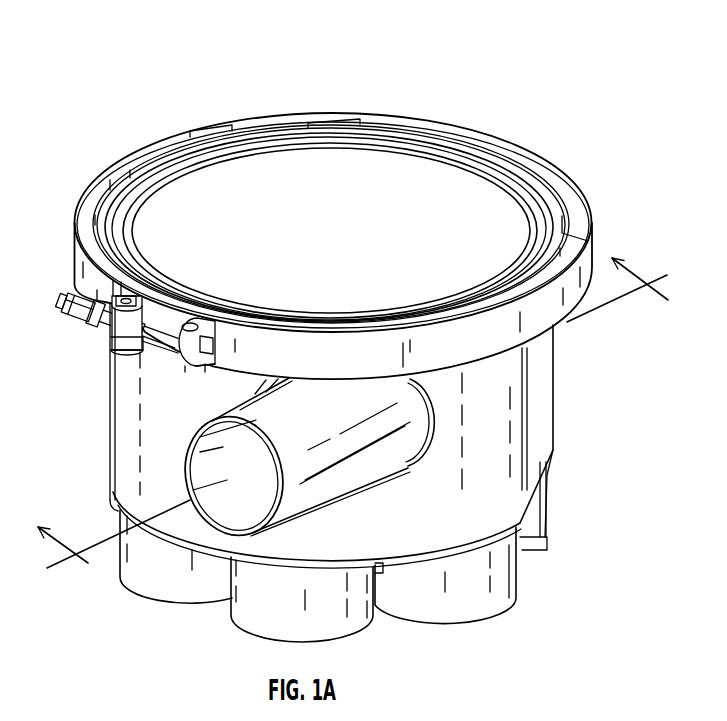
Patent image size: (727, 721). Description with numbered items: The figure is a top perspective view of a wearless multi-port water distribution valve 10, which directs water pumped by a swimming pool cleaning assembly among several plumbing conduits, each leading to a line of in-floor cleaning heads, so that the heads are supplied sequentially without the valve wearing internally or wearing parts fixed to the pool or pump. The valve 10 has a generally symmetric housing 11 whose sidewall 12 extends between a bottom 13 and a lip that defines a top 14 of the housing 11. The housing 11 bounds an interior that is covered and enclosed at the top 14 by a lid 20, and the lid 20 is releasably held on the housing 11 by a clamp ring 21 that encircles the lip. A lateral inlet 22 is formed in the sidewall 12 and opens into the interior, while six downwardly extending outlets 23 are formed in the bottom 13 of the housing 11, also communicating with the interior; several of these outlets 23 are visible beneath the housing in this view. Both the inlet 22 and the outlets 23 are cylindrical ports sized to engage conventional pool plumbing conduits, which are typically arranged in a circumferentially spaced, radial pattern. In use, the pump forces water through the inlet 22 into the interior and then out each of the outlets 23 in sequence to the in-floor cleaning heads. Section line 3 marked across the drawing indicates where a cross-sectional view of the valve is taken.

The wearless multi-port water distribution valve 10 is at (611, 64).
The housing 11 is at (550, 385).
The sidewall 12 is at (548, 435).
The bottom 13 is at (547, 507).
The top 14 is at (586, 200).
The lid 20 is at (469, 187).
The clamp ring 21 is at (80, 321).
The lateral inlet 22 is at (371, 458).
The outlets 23 is at (220, 602).
The section line 3- 3 is at (360, 421).